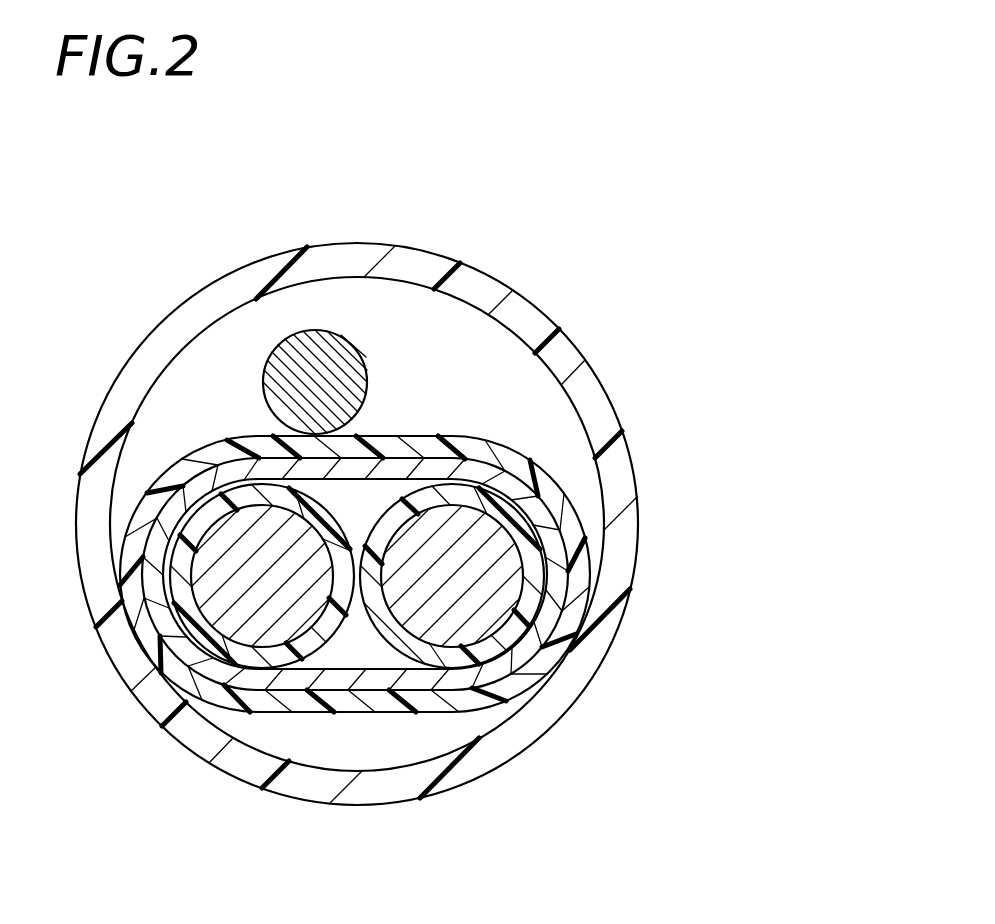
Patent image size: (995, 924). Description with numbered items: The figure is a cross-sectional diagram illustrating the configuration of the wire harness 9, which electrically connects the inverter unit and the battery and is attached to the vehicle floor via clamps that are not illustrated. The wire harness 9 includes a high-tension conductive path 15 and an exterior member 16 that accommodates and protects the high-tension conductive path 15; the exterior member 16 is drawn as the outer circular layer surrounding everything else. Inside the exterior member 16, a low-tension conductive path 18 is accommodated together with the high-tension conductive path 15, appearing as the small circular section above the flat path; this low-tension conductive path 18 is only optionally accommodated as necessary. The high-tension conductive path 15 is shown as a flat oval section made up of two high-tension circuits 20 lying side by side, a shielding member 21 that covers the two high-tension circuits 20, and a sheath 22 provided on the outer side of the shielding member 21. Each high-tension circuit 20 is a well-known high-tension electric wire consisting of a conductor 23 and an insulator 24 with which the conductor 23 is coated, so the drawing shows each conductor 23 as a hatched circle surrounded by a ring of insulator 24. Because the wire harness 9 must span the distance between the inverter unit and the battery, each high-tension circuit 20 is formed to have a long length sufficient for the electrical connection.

The wire harness 9 is at (620, 177).
The high-tension conductive path 15 is at (437, 430).
The exterior member 16 is at (553, 319).
The low-tension conductive path 18 is at (316, 320).
The high-tension circuit 20 is at (437, 408).
The shielding member 21 is at (395, 465).
The sheath 22 is at (427, 443).
The conductor 23 is at (230, 537).
The insulator 24 is at (250, 497).